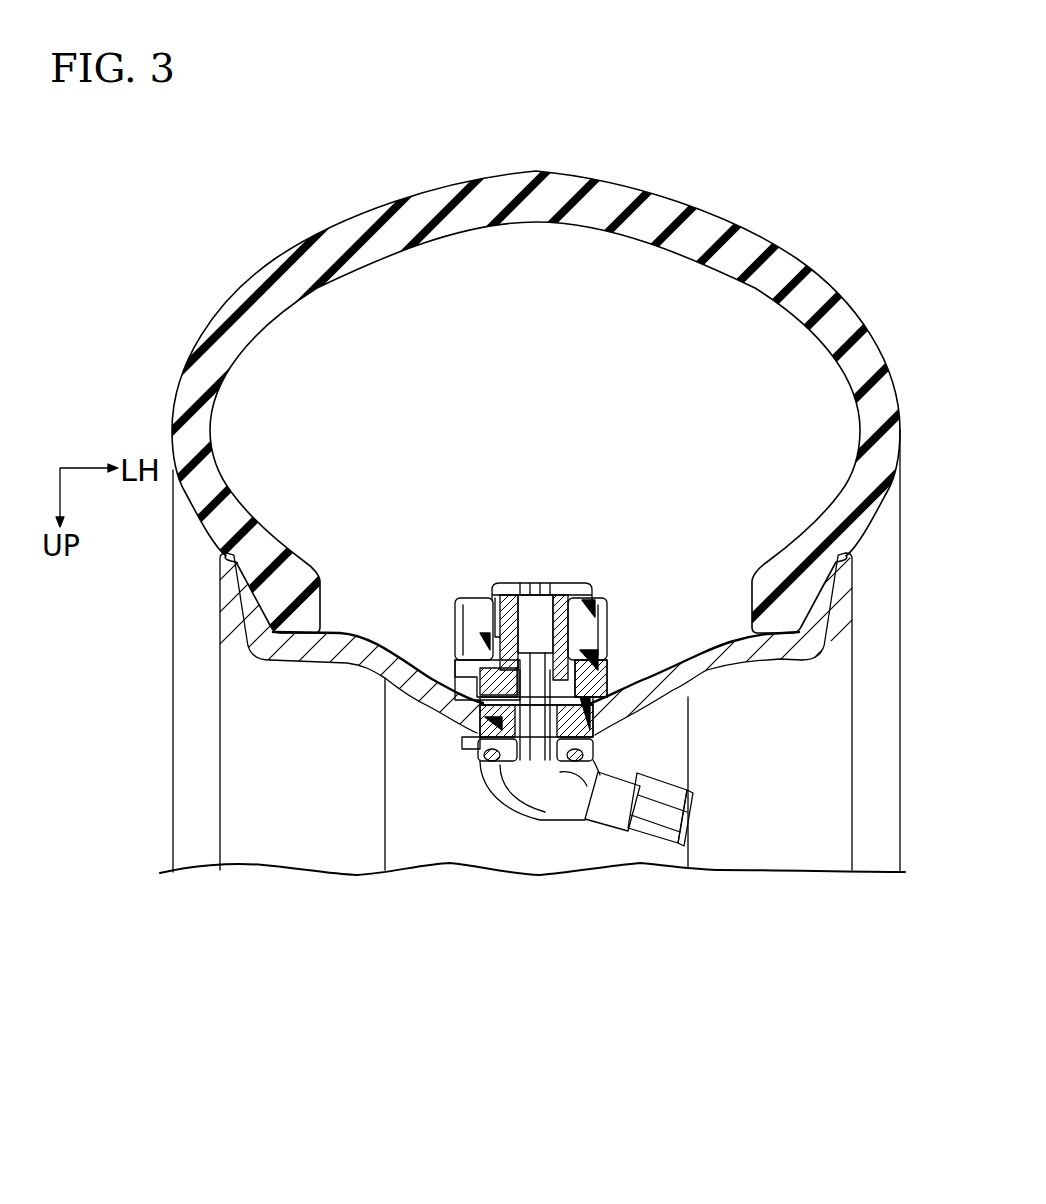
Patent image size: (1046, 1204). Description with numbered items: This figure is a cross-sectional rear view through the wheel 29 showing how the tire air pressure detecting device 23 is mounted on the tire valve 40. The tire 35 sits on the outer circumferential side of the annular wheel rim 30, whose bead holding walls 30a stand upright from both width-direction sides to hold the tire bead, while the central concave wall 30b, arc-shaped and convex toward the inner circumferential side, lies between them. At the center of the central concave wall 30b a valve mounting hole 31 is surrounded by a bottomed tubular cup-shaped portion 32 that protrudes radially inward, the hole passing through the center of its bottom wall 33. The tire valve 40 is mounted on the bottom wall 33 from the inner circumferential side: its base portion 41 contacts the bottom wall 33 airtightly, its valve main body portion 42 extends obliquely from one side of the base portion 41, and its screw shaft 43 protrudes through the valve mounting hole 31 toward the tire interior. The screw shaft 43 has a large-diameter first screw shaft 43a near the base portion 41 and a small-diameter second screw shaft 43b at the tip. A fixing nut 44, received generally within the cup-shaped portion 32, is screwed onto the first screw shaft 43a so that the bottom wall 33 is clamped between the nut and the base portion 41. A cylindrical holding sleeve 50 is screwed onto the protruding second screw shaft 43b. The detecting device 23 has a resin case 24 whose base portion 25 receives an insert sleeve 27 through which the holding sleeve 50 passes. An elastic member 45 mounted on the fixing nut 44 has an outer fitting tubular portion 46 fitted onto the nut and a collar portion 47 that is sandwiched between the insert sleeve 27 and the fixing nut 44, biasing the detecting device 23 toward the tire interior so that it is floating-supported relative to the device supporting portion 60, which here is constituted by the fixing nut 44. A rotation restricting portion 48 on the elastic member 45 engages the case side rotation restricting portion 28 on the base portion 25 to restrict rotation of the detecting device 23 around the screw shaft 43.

The tire air pressure detecting device 23 is at (483, 575).
The case 24 is at (533, 583).
The base portion 25 is at (480, 603).
The insert sleeve 27 is at (496, 608).
The case side rotation restricting portion 28 is at (591, 678).
The wheel 29 is at (523, 393).
The wheel rim 30 is at (526, 694).
The bead holding wall 30a is at (242, 591).
The central concave wall 30b is at (641, 681).
The valve mounting hole 31 is at (490, 762).
The cup-shaped portion 32 is at (467, 737).
The bottom wall 33 is at (470, 760).
The tire 35 is at (690, 212).
The tire valve 40 is at (586, 853).
The base portion 41 is at (537, 790).
The valve main body portion 42 is at (615, 810).
The screw shaft 43 is at (380, 571).
The first screw shaft 43a is at (487, 690).
The second screw shaft 43b is at (486, 640).
The fixing nut 44 is at (500, 712).
The elastic member 45 is at (752, 720).
The outer fitting tubular portion 46 is at (587, 718).
The collar portion 47 is at (587, 688).
The rotation restricting portion 48 is at (588, 680).
The holding sleeve 50 is at (510, 650).
The device supporting portion 60 is at (152, 917).